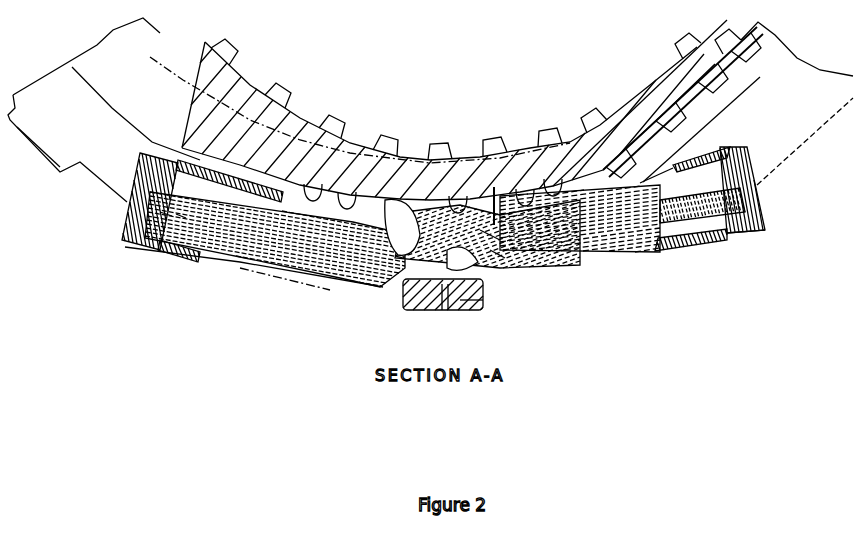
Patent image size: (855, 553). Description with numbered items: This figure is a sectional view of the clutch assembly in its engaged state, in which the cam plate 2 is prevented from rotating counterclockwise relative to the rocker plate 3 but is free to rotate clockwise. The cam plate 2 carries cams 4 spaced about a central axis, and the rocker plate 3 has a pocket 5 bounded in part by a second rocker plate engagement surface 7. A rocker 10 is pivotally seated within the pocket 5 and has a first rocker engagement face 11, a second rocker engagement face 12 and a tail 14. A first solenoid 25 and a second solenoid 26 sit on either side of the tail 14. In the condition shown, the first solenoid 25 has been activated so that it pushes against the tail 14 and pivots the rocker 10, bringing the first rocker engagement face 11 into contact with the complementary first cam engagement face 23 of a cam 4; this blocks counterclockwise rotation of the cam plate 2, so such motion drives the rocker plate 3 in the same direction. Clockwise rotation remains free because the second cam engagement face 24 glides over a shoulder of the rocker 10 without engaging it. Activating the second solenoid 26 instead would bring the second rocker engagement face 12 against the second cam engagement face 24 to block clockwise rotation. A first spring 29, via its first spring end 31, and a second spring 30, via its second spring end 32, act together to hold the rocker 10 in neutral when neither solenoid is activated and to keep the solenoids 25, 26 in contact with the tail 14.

The cam plate 2 is at (250, 128).
The rocker plate 3 is at (189, 253).
The cams 4 is at (207, 152).
The pockets 5 is at (413, 245).
The second rocker plate engagement surface 7 is at (497, 252).
The rocker 10 is at (440, 222).
The first rocker engagement face 11 is at (425, 215).
The second rocker engagement face 12 is at (487, 238).
The tail 14 is at (414, 285).
The first cam engagement face 23 is at (415, 230).
The second cam engagement face 24 is at (509, 200).
The first solenoid 25 is at (583, 260).
The second solenoid 26 is at (283, 268).
The first spring 29 is at (168, 217).
The second spring 30 is at (720, 210).
The first spring end 31 is at (181, 216).
The second spring end 32 is at (133, 212).